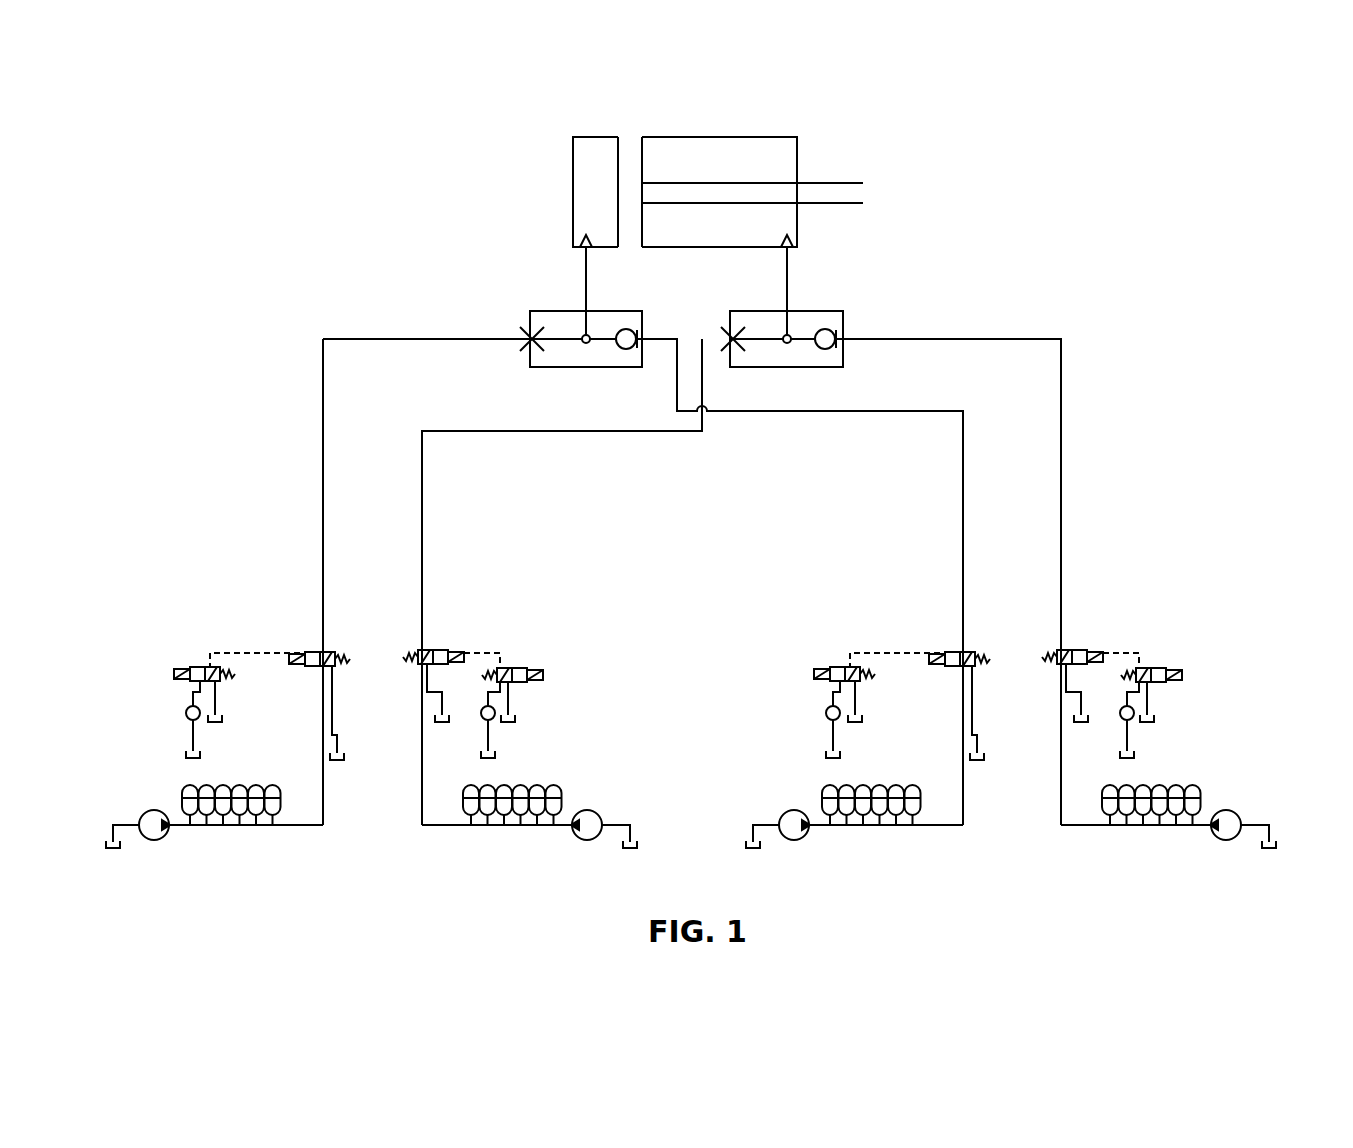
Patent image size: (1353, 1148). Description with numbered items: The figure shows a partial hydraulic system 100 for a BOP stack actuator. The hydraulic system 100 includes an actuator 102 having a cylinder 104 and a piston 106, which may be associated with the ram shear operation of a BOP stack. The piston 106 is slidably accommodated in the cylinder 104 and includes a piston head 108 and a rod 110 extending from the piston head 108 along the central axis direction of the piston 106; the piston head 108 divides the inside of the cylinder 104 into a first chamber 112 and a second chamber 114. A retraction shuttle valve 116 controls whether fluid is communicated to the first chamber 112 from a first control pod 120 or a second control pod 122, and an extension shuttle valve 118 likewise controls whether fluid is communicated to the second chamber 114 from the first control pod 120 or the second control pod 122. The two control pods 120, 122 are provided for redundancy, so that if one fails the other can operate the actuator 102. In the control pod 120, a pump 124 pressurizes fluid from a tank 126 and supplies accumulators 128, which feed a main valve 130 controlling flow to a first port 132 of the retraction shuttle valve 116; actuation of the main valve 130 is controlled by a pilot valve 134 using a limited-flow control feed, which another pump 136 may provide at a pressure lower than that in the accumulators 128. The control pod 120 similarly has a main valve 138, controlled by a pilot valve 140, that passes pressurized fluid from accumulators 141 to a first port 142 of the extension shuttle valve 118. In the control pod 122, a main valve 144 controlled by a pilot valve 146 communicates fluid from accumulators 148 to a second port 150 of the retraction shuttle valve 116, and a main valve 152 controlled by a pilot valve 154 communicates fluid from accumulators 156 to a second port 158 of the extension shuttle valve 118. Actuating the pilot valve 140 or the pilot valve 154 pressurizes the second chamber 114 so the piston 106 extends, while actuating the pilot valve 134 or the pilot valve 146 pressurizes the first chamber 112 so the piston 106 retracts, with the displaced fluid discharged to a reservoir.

The hydraulic system 100 is at (355, 218).
The actuator 102 is at (690, 135).
The cylinder 104 is at (596, 137).
The piston 106 is at (835, 178).
The piston head 108 is at (627, 150).
The rod 110 is at (847, 197).
The first chamber 112 is at (745, 165).
The second chamber 114 is at (596, 183).
The retraction shuttle valve 116 is at (829, 330).
The extension shuttle valve 118 is at (586, 320).
The first control pod 120 is at (1169, 753).
The second control pod 122 is at (253, 709).
The pump 124 is at (1204, 878).
The tank 126 is at (1249, 874).
The accumulators 128 is at (1199, 763).
The main valve 130 is at (1098, 653).
The first port 132 is at (850, 344).
The pilot valve 134 is at (1176, 661).
The pump 136 is at (1188, 714).
The main valve 138 is at (938, 672).
The pilot valve 140 is at (835, 679).
The accumulators 141 is at (934, 763).
The first port 142 is at (646, 340).
The main valve 144 is at (432, 648).
The pilot valve 146 is at (505, 666).
The accumulators 148 is at (511, 775).
The second port 150 is at (723, 348).
The main valve 152 is at (330, 650).
The pilot valve 154 is at (185, 665).
The accumulators 156 is at (236, 775).
The second port 158 is at (530, 346).